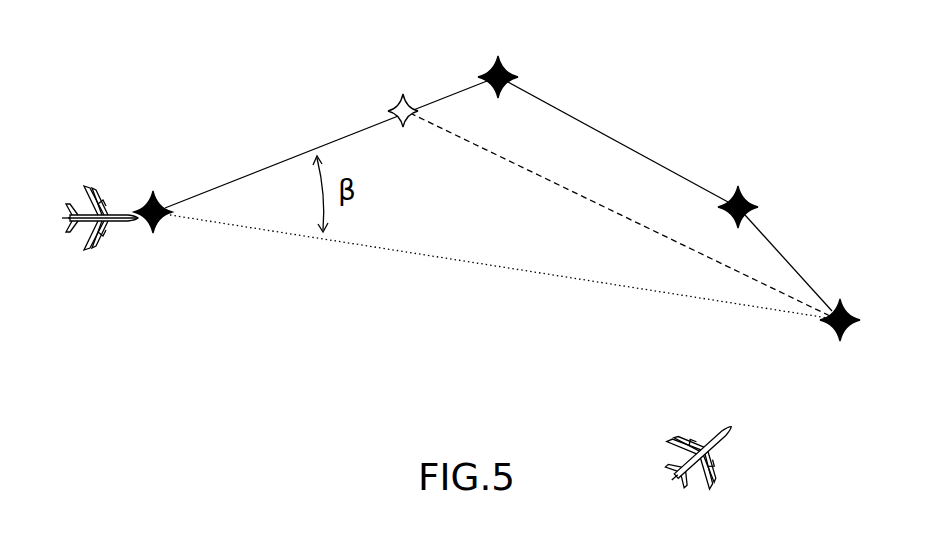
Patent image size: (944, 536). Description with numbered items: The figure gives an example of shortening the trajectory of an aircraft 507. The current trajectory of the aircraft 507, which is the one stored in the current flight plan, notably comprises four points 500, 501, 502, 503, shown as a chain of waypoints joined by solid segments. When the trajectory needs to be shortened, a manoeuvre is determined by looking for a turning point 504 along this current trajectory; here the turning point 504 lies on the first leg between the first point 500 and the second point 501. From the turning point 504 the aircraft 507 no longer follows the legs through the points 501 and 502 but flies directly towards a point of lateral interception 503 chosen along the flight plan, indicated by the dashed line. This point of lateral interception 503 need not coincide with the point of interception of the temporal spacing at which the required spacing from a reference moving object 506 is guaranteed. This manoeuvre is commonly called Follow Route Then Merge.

The point of the current trajectory 500 is at (153, 193).
The point of the current trajectory 501 is at (506, 74).
The point of the current trajectory 502 is at (748, 196).
The point of lateral interception 503 is at (848, 330).
The turning point 504 is at (396, 106).
The reference moving object 506 is at (728, 460).
The aircraft 507 is at (78, 202).